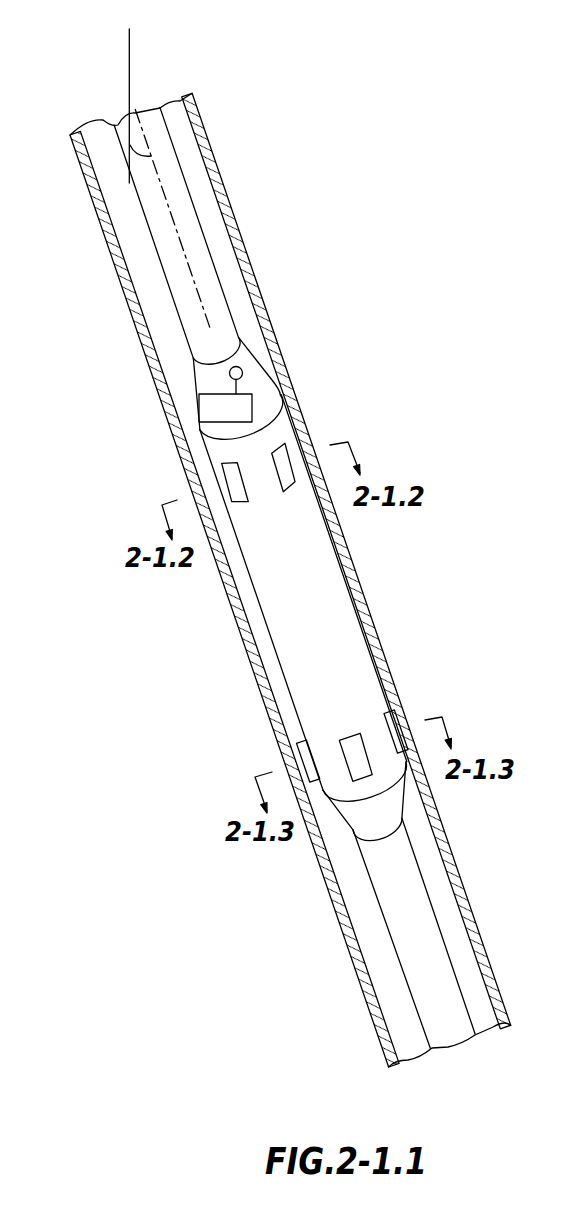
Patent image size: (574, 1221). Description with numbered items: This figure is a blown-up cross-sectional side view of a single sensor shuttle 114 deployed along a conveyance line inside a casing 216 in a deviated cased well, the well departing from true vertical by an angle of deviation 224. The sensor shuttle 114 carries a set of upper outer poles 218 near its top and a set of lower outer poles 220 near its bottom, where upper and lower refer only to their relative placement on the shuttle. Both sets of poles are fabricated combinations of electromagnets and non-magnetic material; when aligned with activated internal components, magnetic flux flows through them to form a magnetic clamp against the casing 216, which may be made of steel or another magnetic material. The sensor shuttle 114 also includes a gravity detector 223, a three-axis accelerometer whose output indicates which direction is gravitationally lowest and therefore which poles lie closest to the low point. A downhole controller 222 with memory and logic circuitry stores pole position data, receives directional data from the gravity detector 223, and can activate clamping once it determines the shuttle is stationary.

The sensor shuttle 114 is at (253, 598).
The casing 216 is at (125, 312).
The upper outer poles 218 is at (215, 470).
The lower outer poles 220 is at (292, 747).
The downhole controller 222 is at (202, 407).
The gravity detector 223 is at (242, 367).
The angle of deviation 224 is at (152, 155).